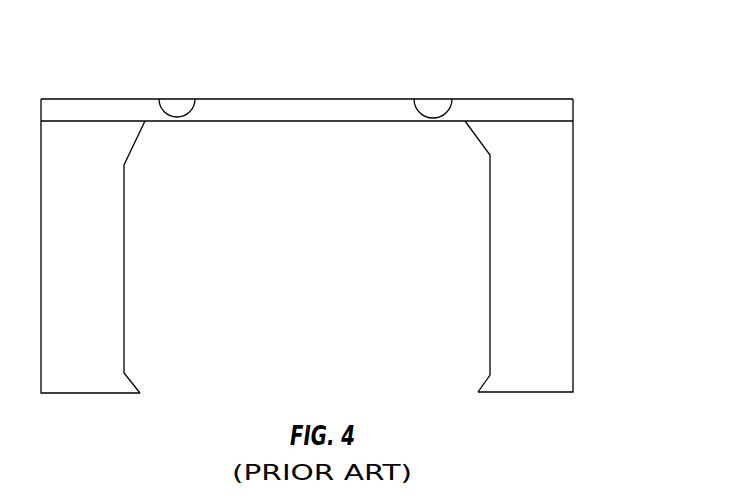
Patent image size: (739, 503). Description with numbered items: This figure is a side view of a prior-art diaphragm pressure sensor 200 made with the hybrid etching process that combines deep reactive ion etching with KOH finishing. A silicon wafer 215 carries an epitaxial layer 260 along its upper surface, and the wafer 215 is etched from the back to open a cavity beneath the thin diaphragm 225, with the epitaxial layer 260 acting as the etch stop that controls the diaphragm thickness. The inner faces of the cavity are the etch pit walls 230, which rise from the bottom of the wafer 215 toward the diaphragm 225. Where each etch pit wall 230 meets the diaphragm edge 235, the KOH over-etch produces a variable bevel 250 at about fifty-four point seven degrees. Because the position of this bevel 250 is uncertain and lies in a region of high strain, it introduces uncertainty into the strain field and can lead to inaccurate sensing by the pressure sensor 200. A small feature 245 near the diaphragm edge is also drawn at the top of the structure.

The diaphragm pressure sensor 200 is at (570, 51).
The wafer 215 is at (577, 352).
The diaphragm 225 is at (324, 88).
The etch pit wall 230 is at (488, 327).
The diaphragm edge 235 is at (466, 121).
The left relief groove 245 is at (177, 98).
The bevel 250 is at (138, 137).
The epitaxial layer 260 is at (563, 108).